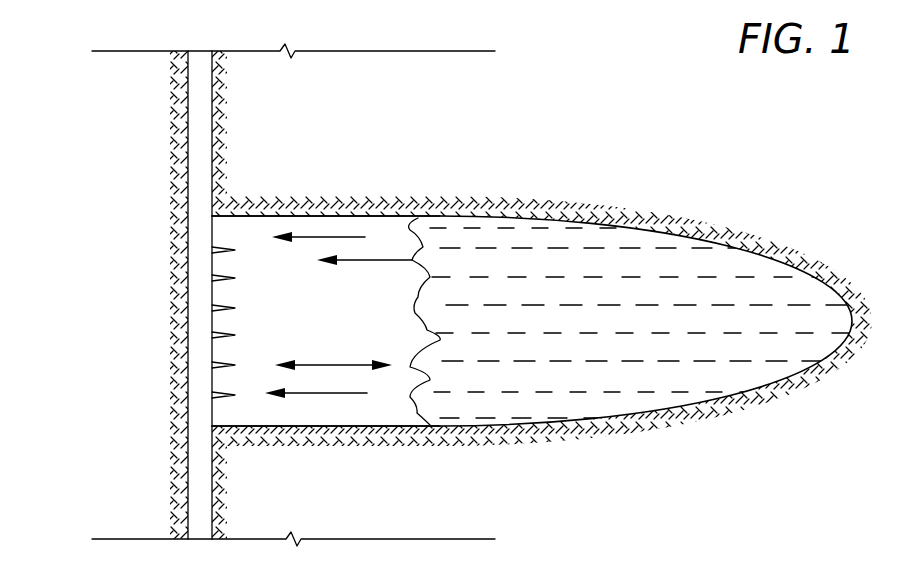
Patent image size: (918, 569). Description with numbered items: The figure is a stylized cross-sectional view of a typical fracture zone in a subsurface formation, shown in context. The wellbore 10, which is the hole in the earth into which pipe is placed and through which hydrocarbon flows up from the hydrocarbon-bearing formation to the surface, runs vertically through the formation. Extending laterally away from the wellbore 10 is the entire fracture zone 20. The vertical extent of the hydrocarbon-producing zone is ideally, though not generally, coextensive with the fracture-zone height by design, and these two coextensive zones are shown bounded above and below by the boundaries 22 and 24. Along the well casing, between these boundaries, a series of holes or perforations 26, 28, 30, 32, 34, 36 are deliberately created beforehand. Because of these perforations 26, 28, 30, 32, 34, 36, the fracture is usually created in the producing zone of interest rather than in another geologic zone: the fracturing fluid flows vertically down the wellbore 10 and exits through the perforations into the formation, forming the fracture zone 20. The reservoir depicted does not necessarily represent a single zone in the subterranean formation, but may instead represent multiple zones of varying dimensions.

The wellbore 10 is at (188, 153).
The fracture zone 20 is at (515, 216).
The zone boundary 22 is at (212, 216).
The zone boundary 24 is at (212, 427).
The perforation 26 is at (235, 250).
The perforation 28 is at (235, 278).
The perforation 30 is at (235, 308).
The perforation 32 is at (235, 335).
The perforation 34 is at (235, 365).
The perforation 36 is at (235, 395).